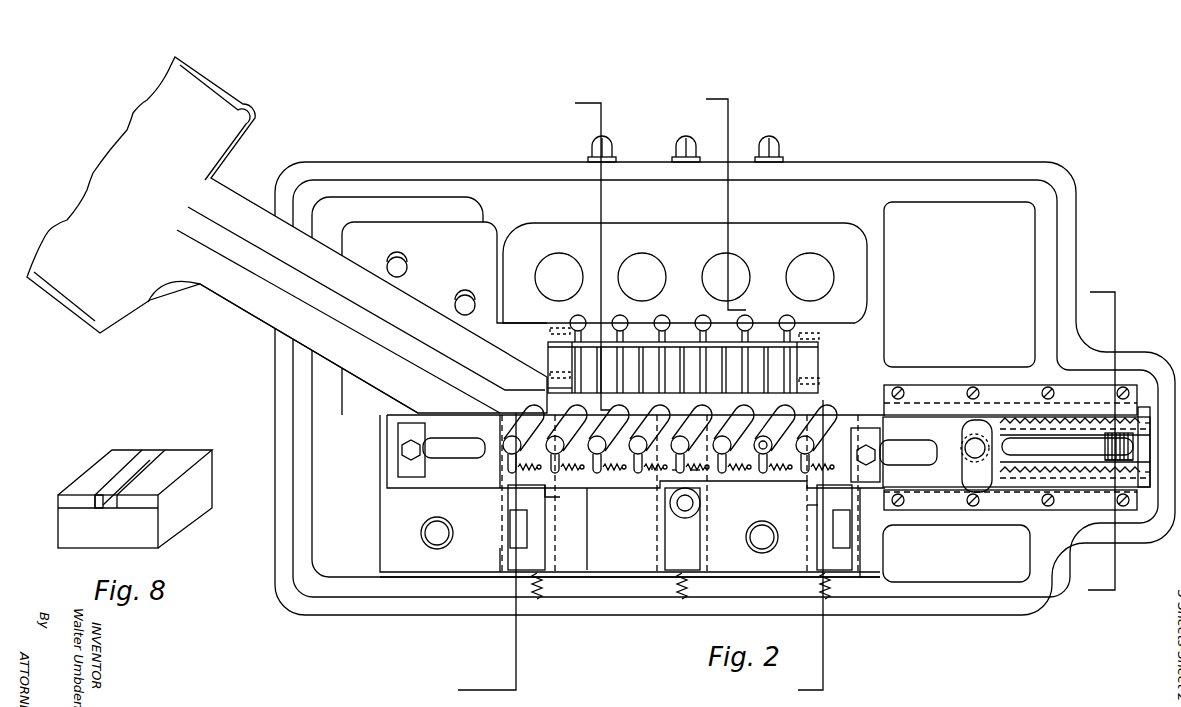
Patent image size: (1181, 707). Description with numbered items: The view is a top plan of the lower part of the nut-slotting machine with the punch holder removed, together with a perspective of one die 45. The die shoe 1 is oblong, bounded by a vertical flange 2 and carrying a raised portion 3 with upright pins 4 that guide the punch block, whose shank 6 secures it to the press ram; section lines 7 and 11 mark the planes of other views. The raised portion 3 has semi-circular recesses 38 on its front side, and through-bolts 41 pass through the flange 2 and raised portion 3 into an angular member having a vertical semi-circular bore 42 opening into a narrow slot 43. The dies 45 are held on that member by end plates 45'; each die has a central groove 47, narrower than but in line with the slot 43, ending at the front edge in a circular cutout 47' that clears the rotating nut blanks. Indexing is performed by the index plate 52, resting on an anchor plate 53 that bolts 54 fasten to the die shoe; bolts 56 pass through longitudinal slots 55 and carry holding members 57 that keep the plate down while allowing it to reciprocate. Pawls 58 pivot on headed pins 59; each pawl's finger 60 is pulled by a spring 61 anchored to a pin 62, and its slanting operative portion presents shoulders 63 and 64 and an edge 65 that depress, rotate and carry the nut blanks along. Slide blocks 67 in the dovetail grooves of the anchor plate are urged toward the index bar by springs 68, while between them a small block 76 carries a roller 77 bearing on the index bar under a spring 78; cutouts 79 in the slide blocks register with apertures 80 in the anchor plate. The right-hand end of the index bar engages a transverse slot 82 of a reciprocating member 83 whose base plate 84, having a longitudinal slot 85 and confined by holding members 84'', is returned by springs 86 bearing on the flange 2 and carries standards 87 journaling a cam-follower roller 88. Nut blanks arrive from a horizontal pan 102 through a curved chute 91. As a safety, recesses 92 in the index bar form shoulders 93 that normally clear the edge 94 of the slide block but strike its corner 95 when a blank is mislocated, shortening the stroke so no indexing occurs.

In FIG. 2, the die shoe 1 is at (1010, 265).
In FIG. 2, the vertical flange 2 is at (912, 176).
In FIG. 2, the raised portion 3 is at (824, 234).
In FIG. 2, the upright pins 4 is at (562, 277).
In FIG. 2, the shank 6 is at (1101, 443).
In FIG. 2, the section line 7 is at (656, 276).
In FIG. 2, the section line 11 is at (534, 394).
In FIG. 2, the semi-circular recesses 38 is at (578, 318).
In FIG. 2, the through-bolts 41 is at (595, 150).
In FIG. 2, the vertical semi-circular bore 42 is at (621, 345).
In FIG. 2, the narrow slot 43 is at (704, 345).
In FIG. 2, the dies 45 is at (698, 360).
In FIG. 8, the dies 45 is at (147, 499).
In FIG. 2, the end plates 45' is at (682, 366).
In FIG. 2, the central groove 47 is at (682, 370).
In FIG. 8, the central groove 47 is at (130, 468).
In FIG. 2, the circular cutout 47' is at (566, 400).
In FIG. 8, the circular cutout 47' is at (107, 515).
In FIG. 2, the indexing plate 52 is at (442, 490).
In FIG. 2, the anchor plate 53 is at (391, 527).
In FIG. 2, the bolts 54 is at (445, 542).
In FIG. 2, the longitudinal slots 55 is at (946, 436).
In FIG. 2, the bolts 56 is at (421, 452).
In FIG. 2, the holding members 57 is at (423, 436).
In FIG. 2, the pawls 58 is at (548, 440).
In FIG. 2, the headed pins 59 is at (511, 448).
In FIG. 2, the forwardly extending finger 60 is at (650, 466).
In FIG. 2, the spring 61 is at (659, 478).
In FIG. 2, the pin 62 is at (700, 470).
In FIG. 2, the shoulder 63 is at (515, 420).
In FIG. 2, the shoulder 64 is at (742, 435).
In FIG. 2, the edge 65 is at (615, 425).
In FIG. 2, the slide block 67 is at (540, 560).
In FIG. 2, the spring 68 is at (540, 597).
In FIG. 2, the small block 76 is at (668, 503).
In FIG. 2, the roller 77 is at (701, 503).
In FIG. 2, the spring 78 is at (680, 597).
In FIG. 2, the cutout 79 is at (512, 522).
In FIG. 2, the aperture 80 is at (500, 548).
In FIG. 2, the transverse slot 82 is at (963, 460).
In FIG. 2, the reciprocating member 83 is at (1145, 412).
In FIG. 2, the base plate 84 is at (1030, 509).
In FIG. 2, the holding members 84'' is at (1010, 372).
In FIG. 2, the longitudinal slot 85 is at (1040, 445).
In FIG. 2, the springs 86 is at (1150, 424).
In FIG. 2, the standards 87 is at (1118, 474).
In FIG. 2, the roller 88 is at (1104, 446).
In FIG. 2, the chute 91 is at (190, 282).
In FIG. 2, the recesses 92 is at (875, 518).
In FIG. 2, the shoulders 93 is at (587, 508).
In FIG. 2, the edge 94 is at (807, 510).
In FIG. 2, the corner 95 is at (548, 500).
In FIG. 2, the horizontal pan 102 is at (221, 104).